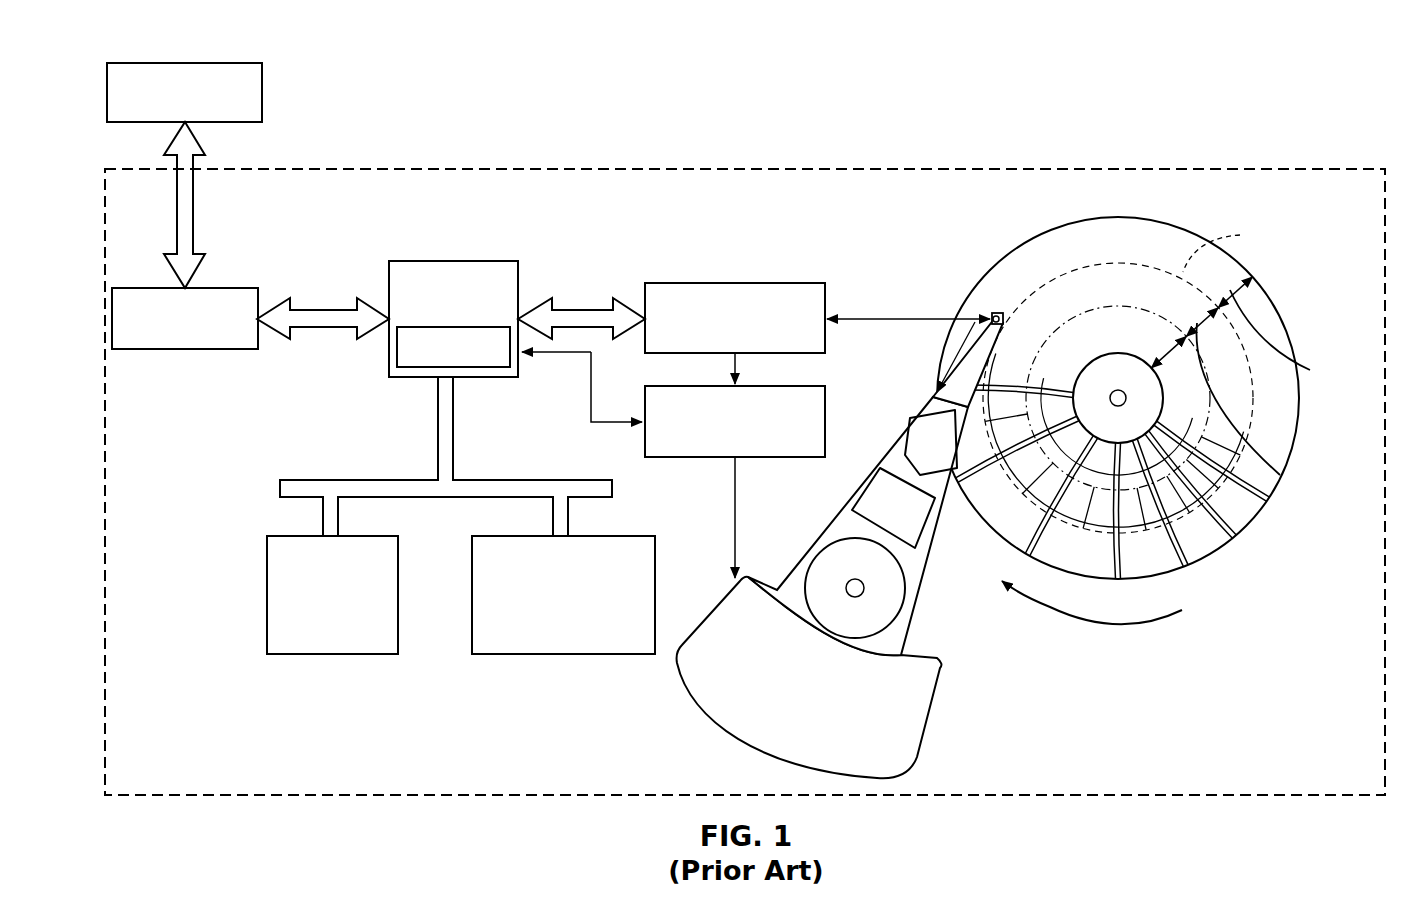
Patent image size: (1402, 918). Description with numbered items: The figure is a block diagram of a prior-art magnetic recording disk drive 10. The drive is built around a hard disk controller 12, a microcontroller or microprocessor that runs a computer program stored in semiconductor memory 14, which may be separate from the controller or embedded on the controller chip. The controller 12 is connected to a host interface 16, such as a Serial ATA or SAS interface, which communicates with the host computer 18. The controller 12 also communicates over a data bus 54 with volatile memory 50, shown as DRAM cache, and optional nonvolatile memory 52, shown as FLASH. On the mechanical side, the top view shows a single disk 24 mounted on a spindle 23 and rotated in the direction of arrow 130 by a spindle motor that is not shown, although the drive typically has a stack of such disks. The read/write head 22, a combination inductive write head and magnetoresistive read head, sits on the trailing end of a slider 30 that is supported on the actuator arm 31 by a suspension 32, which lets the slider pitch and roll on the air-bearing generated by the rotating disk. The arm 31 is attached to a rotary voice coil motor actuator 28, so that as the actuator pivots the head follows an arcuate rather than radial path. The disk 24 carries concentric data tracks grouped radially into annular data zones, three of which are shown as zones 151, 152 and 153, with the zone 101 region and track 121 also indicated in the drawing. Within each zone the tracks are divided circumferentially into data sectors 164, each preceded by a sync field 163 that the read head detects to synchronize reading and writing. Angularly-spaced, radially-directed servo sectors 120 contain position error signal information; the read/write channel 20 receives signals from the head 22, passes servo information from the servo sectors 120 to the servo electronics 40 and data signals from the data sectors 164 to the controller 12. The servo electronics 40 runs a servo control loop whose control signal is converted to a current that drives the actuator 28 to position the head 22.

The magnetic recording disk drive 10 is at (1347, 168).
The hard disk controller 12 is at (413, 262).
The semiconductor memory 14 is at (413, 368).
The host interface 16 is at (158, 290).
The host computer 18 is at (152, 63).
The read/write channel 20 is at (700, 283).
The read/write head 22 is at (1000, 313).
The spindle 23 is at (1117, 396).
The disk 24 is at (1076, 228).
The voice coil motor actuator 28 is at (723, 600).
The slider 30 is at (995, 315).
The actuator arm 31 is at (910, 417).
The suspension 32 is at (962, 372).
The servo electronics 40 is at (700, 386).
The volatile memory 50 is at (267, 547).
The nonvolatile memory 52 is at (657, 551).
The data bus 54 is at (333, 480).
The data zone 101 is at (1226, 246).
The servo sectors 120 is at (1024, 556).
The data tracks 121 is at (1268, 491).
The arrow 130 is at (1098, 619).
The data zone 151 is at (1310, 370).
The data zone 152 is at (1262, 430).
The data zone 153 is at (1162, 352).
The sync fields 163 is at (997, 503).
The data sectors 164 is at (1018, 527).